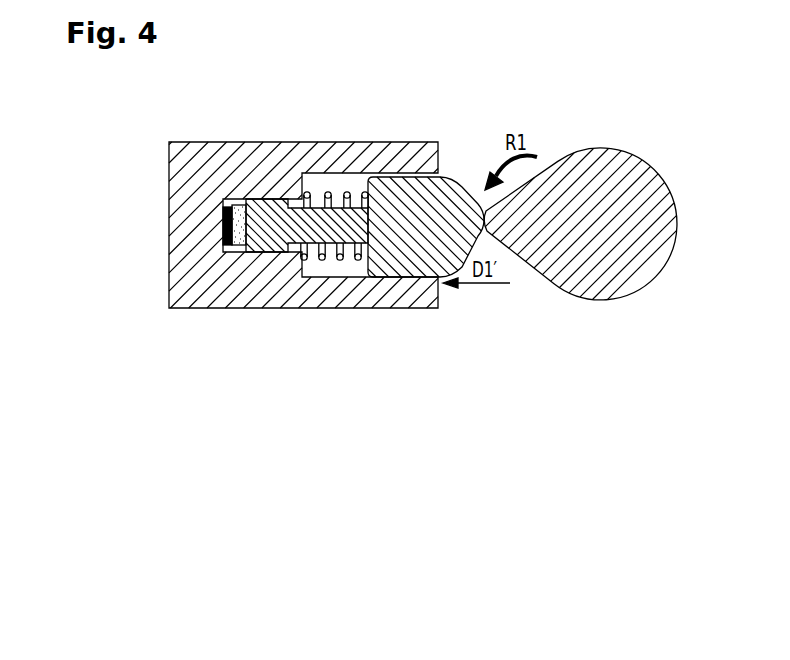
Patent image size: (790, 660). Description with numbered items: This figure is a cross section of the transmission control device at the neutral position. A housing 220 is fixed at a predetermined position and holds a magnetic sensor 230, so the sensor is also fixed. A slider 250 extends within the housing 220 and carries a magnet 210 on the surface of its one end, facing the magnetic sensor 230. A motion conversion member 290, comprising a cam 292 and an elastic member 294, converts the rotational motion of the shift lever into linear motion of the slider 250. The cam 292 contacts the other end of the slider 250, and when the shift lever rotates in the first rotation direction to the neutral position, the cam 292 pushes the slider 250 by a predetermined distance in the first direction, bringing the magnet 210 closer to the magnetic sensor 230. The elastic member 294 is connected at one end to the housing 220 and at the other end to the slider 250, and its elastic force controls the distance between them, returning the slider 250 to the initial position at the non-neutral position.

The magnet 210 is at (242, 252).
The housing 220 is at (169, 186).
The magnetic sensor 230 is at (223, 219).
The slider 250 is at (416, 192).
The motion conversion member 290 is at (612, 400).
The cam 292 is at (607, 277).
The elastic member 294 is at (357, 261).